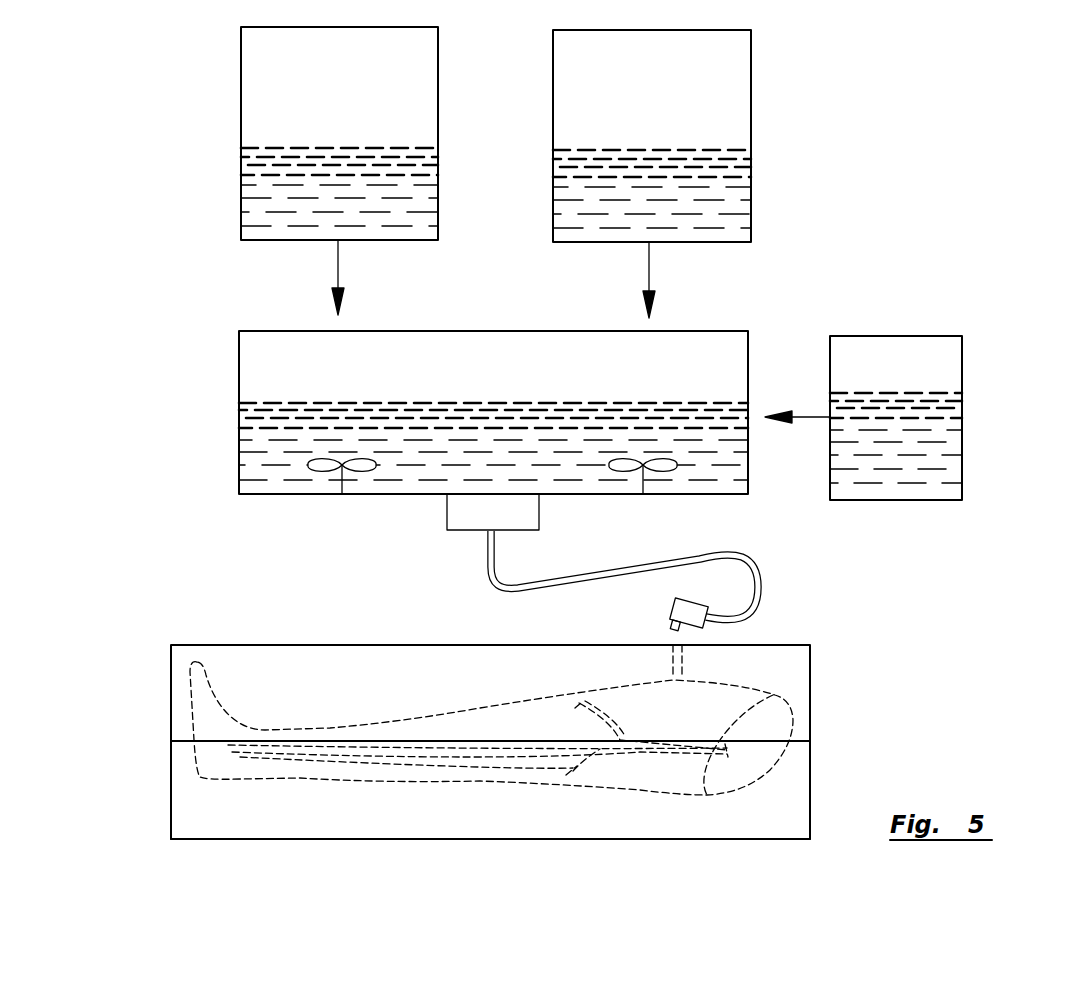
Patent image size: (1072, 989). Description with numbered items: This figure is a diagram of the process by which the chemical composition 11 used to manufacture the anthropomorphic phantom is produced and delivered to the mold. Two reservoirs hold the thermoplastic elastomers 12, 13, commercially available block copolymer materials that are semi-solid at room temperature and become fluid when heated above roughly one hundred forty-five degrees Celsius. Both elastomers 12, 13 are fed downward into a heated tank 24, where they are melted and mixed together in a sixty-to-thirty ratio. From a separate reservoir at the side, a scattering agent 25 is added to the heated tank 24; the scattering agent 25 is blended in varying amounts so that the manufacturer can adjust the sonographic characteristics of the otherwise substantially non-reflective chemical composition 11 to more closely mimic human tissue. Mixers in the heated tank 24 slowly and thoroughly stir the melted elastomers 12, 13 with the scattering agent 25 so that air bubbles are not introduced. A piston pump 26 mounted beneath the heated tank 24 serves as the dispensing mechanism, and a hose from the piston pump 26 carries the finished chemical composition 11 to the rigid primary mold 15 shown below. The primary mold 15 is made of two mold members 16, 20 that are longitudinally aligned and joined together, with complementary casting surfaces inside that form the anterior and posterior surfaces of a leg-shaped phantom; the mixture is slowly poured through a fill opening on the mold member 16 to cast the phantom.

The chemical composition 11 is at (297, 402).
The thermoplastic elastomer 12 is at (352, 134).
The thermoplastic elastomer 13 is at (664, 136).
The rigid primary mold 15 is at (340, 643).
The mold member 16 is at (476, 645).
The mold member 20 is at (527, 840).
The heated tank 24 is at (370, 497).
The scattering agent 25 is at (908, 386).
The piston pump 26 is at (527, 505).